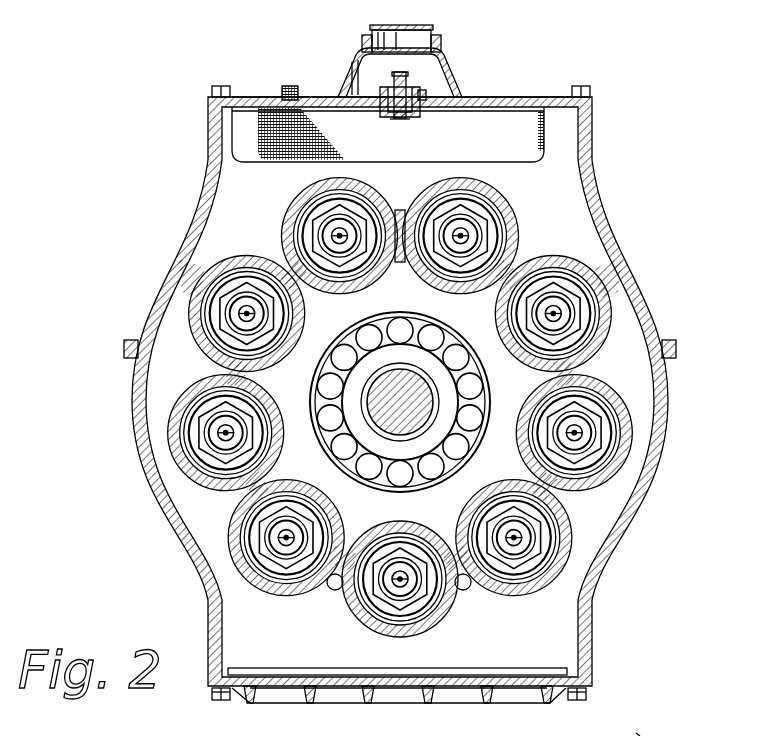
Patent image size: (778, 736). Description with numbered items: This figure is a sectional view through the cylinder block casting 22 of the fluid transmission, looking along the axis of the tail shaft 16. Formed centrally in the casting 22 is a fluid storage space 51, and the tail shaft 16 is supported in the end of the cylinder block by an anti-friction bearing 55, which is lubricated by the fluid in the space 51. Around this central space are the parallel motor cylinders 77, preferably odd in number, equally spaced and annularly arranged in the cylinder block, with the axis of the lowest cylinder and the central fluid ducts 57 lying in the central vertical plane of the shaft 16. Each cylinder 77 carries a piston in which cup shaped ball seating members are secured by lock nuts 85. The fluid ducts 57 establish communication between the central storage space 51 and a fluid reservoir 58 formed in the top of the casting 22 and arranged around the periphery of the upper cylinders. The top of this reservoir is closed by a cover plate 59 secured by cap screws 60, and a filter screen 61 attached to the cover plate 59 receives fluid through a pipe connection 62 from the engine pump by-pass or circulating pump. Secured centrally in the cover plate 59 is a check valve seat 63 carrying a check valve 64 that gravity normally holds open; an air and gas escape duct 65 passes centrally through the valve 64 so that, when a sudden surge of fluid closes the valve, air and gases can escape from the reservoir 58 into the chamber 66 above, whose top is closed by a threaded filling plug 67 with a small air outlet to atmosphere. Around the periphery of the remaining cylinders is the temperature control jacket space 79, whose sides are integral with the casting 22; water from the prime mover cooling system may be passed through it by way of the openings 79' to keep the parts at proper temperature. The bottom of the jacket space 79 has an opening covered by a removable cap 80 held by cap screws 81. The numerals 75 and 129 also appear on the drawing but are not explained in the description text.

The tail shaft 16 is at (430, 375).
The casting 22 is at (427, 391).
The fluid storage space 51 is at (400, 410).
The anti-friction bearing 55 is at (400, 332).
The fluid ducts 57 is at (280, 262).
The fluid reservoir 58 is at (563, 210).
The cover plate 59 is at (540, 96).
The cap screws 60 is at (212, 92).
The filter screen 61 is at (258, 150).
The pipe connection 62 is at (288, 95).
The check valve seat 63 is at (420, 92).
The check valve 64 is at (384, 118).
The air and gas escape duct 65 is at (400, 120).
The chamber 66 is at (366, 70).
The filling plug 67 is at (440, 33).
The bolt hole 75 is at (334, 592).
The motor cylinders 77 is at (176, 470).
The temperature control jacket space 79 is at (427, 391).
The openings 79' is at (404, 336).
The removable cap 80 is at (283, 690).
The cap screws 81 is at (214, 698).
The lock nuts 85 is at (266, 336).
The part 129 is at (628, 724).